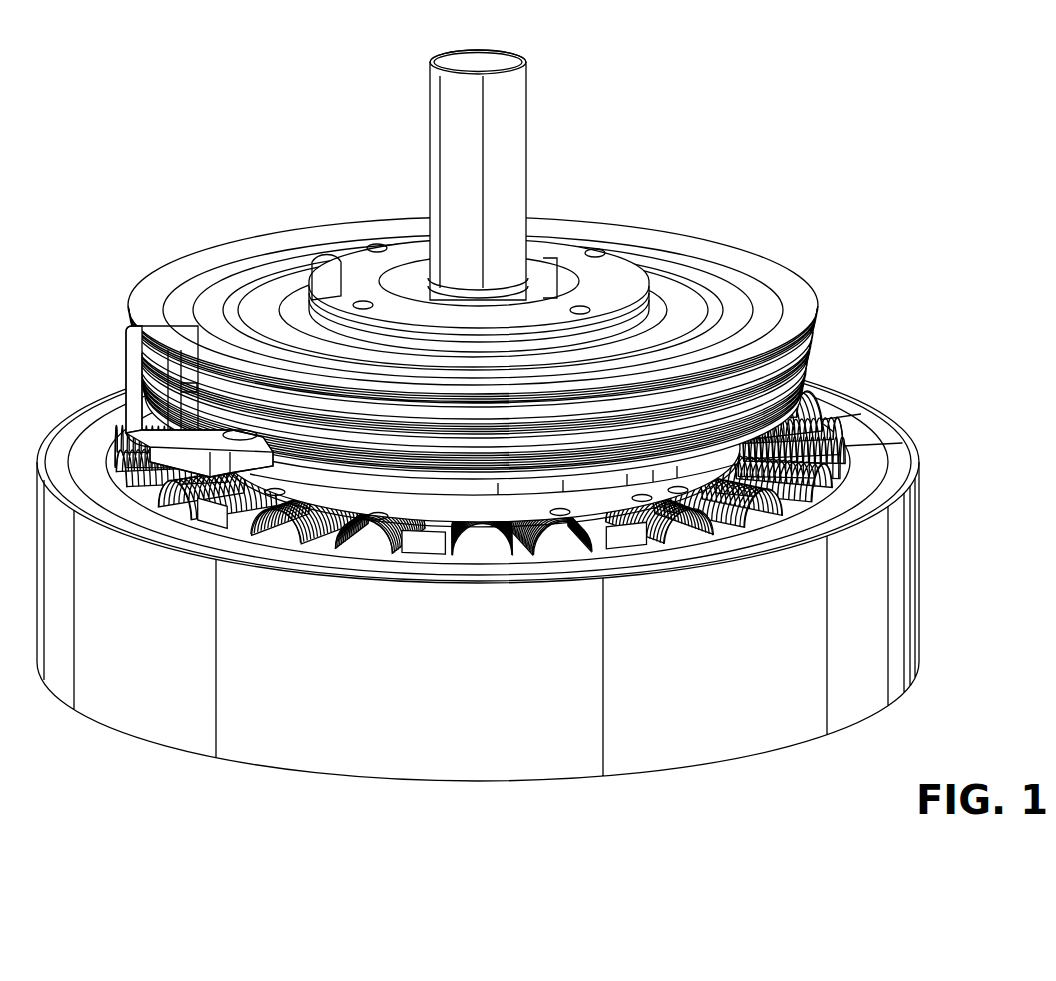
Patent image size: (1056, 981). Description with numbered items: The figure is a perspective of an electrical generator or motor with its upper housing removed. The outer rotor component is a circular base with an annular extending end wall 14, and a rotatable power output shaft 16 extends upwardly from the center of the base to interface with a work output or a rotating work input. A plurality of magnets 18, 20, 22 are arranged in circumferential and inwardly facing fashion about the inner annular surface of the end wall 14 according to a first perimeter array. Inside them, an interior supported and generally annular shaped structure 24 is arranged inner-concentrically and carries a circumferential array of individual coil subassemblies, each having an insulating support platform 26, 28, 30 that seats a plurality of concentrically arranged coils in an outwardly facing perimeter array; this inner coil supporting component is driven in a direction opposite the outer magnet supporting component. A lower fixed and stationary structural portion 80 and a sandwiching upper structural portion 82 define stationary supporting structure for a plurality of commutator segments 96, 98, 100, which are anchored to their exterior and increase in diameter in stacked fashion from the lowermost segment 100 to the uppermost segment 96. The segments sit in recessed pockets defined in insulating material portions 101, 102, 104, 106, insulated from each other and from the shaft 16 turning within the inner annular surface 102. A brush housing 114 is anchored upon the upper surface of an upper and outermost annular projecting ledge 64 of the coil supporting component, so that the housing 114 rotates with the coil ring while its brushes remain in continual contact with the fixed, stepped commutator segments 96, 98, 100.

The annular extending end wall 14 is at (672, 758).
The rotatable power output shaft 16 is at (522, 118).
The magnet 18 is at (876, 488).
The magnet 20 is at (878, 440).
The magnet 22 is at (815, 388).
The annular shaped structure 24 is at (594, 548).
The coil subassembly support platform 26 is at (302, 532).
The coil subassembly support platform 28 is at (497, 540).
The coil subassembly support platform 30 is at (680, 528).
The annular projecting ledge 64 is at (744, 469).
The lower fixed structural portion 80 is at (447, 498).
The upper structural portion 82 is at (613, 245).
The commutator segment 96 is at (150, 385).
The commutator segment 98 is at (235, 398).
The commutator segment 100 is at (392, 519).
The insulating material portion 101 is at (752, 266).
The inner annular surface 102 is at (640, 402).
The insulating material portion 104 is at (332, 413).
The insulating material portion 106 is at (605, 540).
The brush housing 114 is at (130, 354).